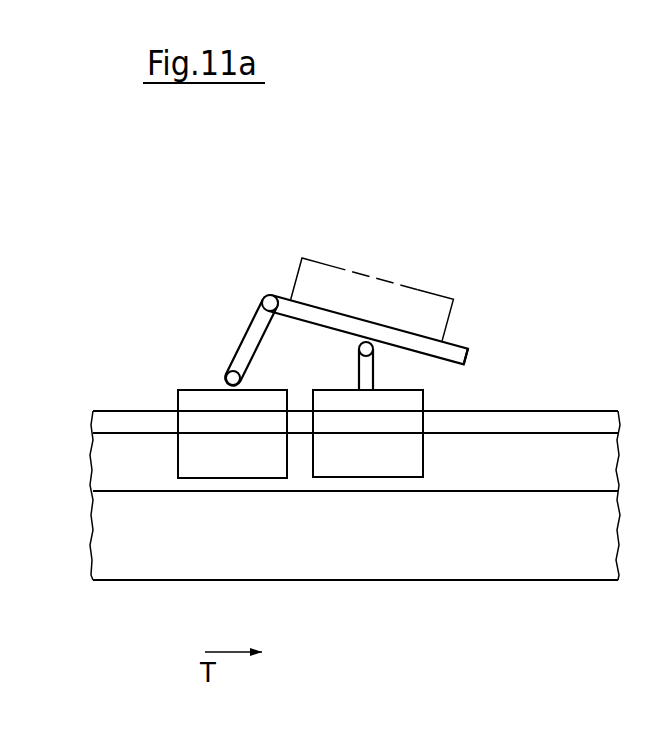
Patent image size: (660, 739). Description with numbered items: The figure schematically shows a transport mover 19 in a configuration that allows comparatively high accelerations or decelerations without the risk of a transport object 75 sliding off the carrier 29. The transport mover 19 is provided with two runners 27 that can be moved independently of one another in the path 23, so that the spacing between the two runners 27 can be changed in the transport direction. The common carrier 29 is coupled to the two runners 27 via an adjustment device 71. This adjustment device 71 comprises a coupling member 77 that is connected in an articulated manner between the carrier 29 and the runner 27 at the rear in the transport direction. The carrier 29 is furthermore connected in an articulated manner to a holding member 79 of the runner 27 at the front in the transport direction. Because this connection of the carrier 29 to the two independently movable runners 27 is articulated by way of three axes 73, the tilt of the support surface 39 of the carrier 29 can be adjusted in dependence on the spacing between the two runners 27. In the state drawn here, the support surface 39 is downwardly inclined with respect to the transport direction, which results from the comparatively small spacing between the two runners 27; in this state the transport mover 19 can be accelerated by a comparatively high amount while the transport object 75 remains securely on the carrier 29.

The transport mover 19 is at (443, 257).
The path 23 is at (117, 410).
The runner 27 is at (219, 468).
The carrier 29 is at (462, 352).
The support surface 39 is at (452, 342).
The adjustment device 71 is at (242, 283).
The axis 73 is at (272, 294).
The transport object 75 is at (368, 292).
The coupling member 77 is at (248, 342).
The holding member 79 is at (367, 366).